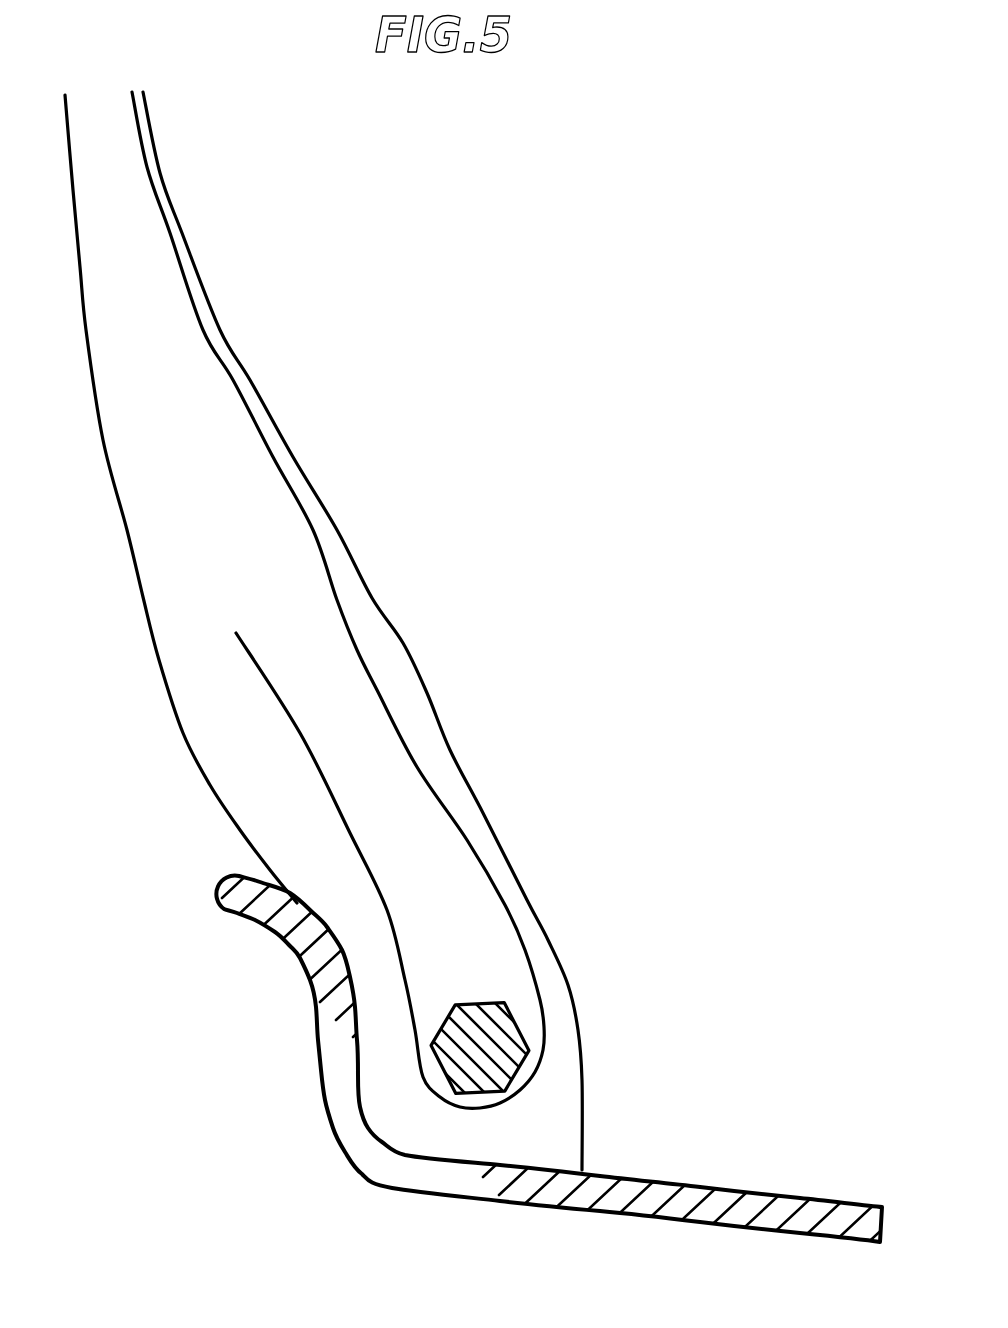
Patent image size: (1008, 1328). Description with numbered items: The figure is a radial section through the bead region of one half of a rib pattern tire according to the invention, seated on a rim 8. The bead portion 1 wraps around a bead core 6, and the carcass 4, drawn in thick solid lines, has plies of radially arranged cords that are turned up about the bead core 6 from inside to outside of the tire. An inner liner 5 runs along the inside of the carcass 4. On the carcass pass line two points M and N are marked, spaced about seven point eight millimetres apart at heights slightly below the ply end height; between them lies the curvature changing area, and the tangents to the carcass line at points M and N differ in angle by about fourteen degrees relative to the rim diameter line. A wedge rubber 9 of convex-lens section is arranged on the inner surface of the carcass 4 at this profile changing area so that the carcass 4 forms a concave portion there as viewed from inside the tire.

The bead portion 1 is at (258, 828).
The carcass 4 is at (147, 173).
The inner liner 5 is at (170, 221).
The bead core 6 is at (508, 1032).
The rim 8 is at (695, 1192).
The wedge rubber 9 is at (370, 615).
The point M is at (355, 650).
The point N is at (373, 688).